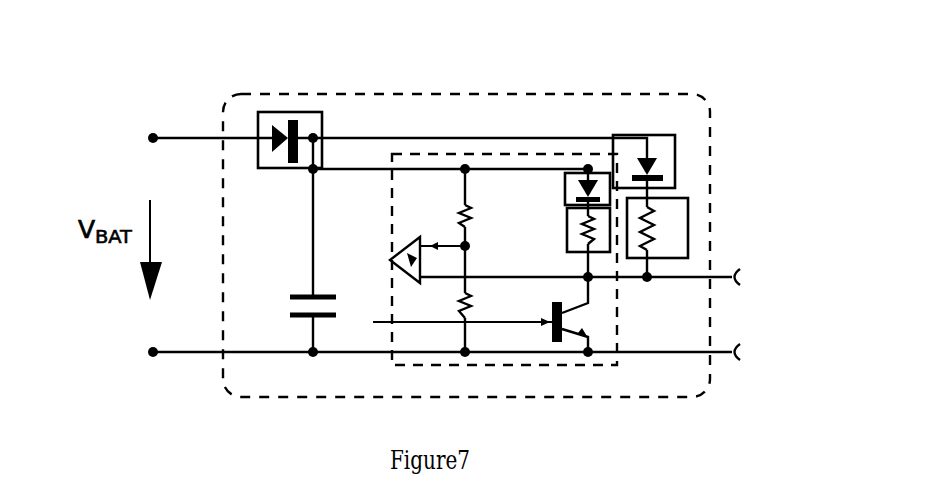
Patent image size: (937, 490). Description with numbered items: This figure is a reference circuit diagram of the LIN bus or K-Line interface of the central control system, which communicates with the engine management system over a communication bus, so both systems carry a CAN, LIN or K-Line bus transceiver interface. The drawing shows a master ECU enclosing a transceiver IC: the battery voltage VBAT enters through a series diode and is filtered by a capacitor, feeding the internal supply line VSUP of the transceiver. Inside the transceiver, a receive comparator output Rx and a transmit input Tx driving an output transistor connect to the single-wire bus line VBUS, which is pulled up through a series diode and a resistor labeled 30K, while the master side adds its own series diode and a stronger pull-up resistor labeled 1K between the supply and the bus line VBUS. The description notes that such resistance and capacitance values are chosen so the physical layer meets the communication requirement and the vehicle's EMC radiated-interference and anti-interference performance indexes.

The 30 kOhm pull-up resistor 30K is at (568, 242).
The 1 kOhm master pull-up resistor 1K is at (660, 237).
The receive comparator Rx is at (390, 260).
The transmit input Tx is at (449, 326).
The bus voltage line VBUS is at (617, 285).
The supply voltage line VSUP is at (450, 186).
The battery voltage input VBAT is at (170, 133).